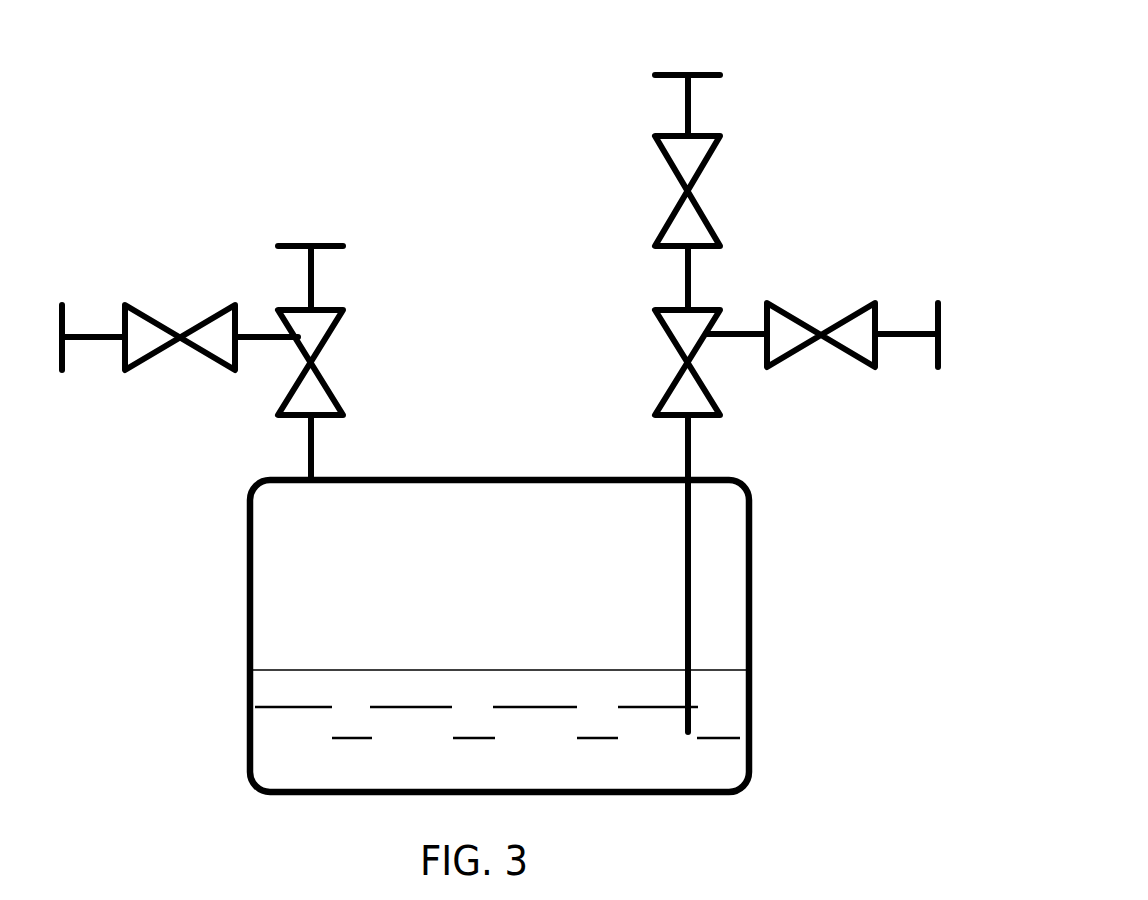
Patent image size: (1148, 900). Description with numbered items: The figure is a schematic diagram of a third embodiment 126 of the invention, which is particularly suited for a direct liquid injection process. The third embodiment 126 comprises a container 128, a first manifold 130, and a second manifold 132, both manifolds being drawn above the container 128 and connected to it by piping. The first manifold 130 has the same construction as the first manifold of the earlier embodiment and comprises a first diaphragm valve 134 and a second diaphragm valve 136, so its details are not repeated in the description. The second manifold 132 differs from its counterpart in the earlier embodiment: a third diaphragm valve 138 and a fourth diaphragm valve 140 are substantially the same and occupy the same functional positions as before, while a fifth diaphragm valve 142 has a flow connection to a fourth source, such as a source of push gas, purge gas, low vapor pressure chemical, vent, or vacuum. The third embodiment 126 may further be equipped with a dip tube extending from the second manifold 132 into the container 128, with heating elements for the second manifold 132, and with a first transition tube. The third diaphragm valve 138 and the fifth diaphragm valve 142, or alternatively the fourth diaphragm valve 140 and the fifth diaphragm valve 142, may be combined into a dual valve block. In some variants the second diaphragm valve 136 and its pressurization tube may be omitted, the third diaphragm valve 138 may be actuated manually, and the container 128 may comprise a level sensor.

The third embodiment 126 is at (495, 84).
The container 128 is at (425, 636).
The first manifold 130 is at (249, 286).
The second manifold 132 is at (730, 375).
The first diaphragm valve 134 is at (359, 330).
The second diaphragm valve 136 is at (146, 386).
The third diaphragm valve 138 is at (622, 362).
The fourth diaphragm valve 140 is at (621, 191).
The fifth diaphragm valve 142 is at (849, 375).